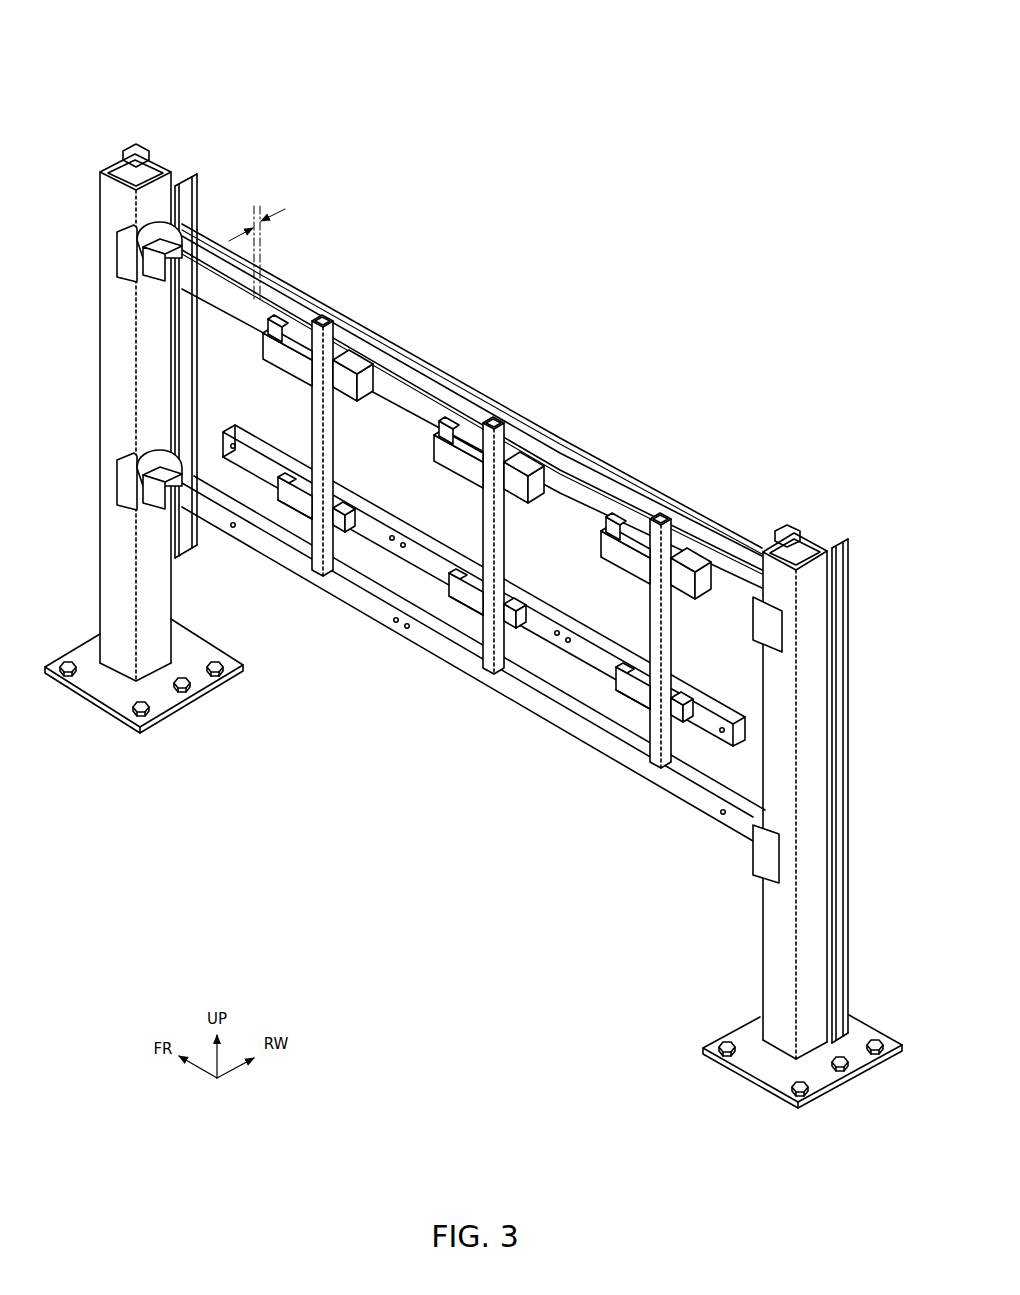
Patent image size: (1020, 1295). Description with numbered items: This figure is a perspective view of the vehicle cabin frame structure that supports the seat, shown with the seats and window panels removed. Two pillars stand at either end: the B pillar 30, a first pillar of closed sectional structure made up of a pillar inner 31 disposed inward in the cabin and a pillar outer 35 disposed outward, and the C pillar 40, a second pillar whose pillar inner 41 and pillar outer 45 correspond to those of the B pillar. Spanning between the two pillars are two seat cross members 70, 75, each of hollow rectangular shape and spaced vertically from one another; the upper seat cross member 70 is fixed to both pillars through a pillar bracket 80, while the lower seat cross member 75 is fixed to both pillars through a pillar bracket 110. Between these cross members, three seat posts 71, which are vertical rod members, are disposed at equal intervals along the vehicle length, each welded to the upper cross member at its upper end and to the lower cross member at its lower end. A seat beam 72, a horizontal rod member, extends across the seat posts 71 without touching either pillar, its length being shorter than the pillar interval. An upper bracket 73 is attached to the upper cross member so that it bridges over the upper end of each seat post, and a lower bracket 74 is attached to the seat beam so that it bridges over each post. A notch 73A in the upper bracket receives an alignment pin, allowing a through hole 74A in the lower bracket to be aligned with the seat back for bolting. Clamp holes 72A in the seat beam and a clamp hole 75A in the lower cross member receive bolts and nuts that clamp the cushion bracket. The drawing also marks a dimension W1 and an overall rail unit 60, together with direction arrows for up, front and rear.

The B pillar 30 is at (200, 72).
The pillar inner 31 is at (112, 168).
The pillar outer 35 is at (160, 149).
The C pillar 40 is at (837, 420).
The pillar inner 41 is at (768, 548).
The pillar outer 45 is at (826, 528).
The rail unit 60 is at (590, 455).
The seat cross member 70 is at (227, 316).
The seat post 71 is at (334, 462).
The seat beam 72 is at (447, 566).
The clamp hole 72A is at (728, 740).
The upper bracket 73 is at (349, 397).
The notch 73A is at (300, 358).
The lower bracket 74 is at (284, 481).
The through hole 74A is at (297, 512).
The seat cross member 75 is at (223, 526).
The clamp hole 75A is at (721, 814).
The pillar bracket 80 is at (124, 262).
The pillar bracket 110 is at (122, 483).
The width W1 is at (254, 252).